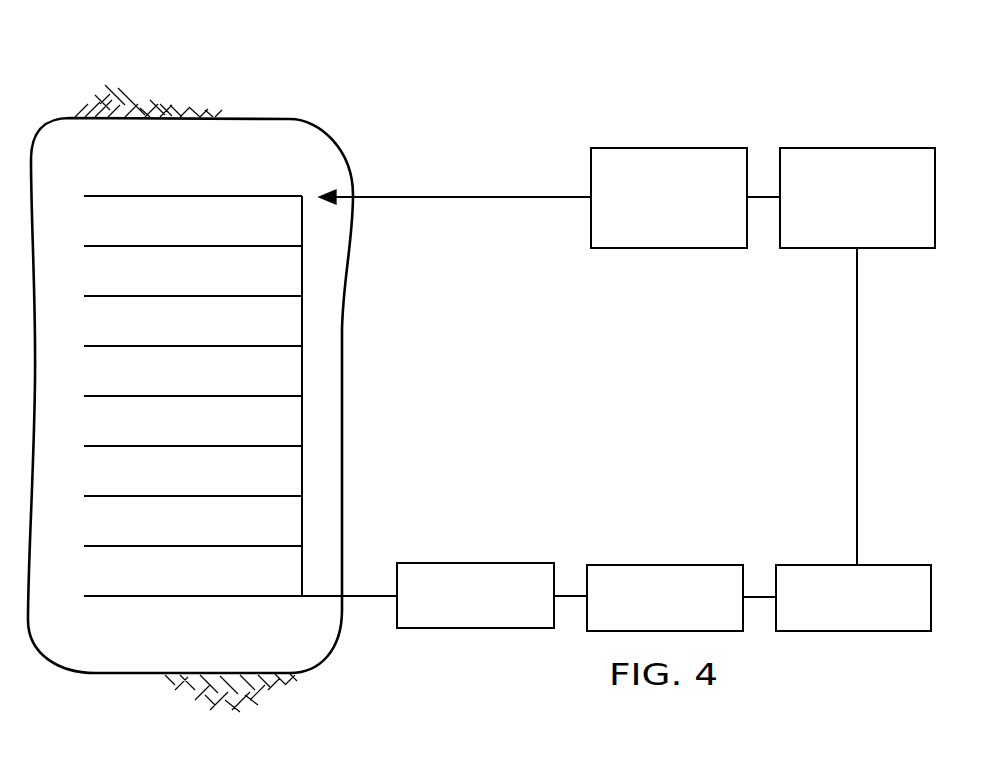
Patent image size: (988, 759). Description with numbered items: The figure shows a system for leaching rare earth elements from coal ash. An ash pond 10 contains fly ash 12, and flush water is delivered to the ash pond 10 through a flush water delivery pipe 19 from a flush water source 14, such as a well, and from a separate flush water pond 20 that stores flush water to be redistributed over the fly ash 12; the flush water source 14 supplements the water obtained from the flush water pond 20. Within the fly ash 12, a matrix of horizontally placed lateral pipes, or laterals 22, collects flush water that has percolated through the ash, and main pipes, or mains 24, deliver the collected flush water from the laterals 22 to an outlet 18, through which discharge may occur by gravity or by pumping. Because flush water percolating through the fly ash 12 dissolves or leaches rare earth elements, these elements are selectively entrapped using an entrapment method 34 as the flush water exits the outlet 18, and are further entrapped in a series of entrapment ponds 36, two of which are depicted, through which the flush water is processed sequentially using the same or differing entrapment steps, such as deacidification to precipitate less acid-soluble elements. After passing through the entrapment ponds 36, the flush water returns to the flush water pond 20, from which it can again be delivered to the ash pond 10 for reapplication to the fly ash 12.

The ash pond 10 is at (330, 92).
The fly ash 12 is at (137, 667).
The flush water source 14 is at (670, 147).
The outlet 18 is at (345, 598).
The flush water delivery pipe 19 is at (463, 195).
The flush water pond 20 is at (868, 147).
The laterals 22 is at (281, 347).
The mains 24 is at (302, 482).
The entrapment method 34 is at (475, 630).
The entrapment ponds 36 is at (665, 565).